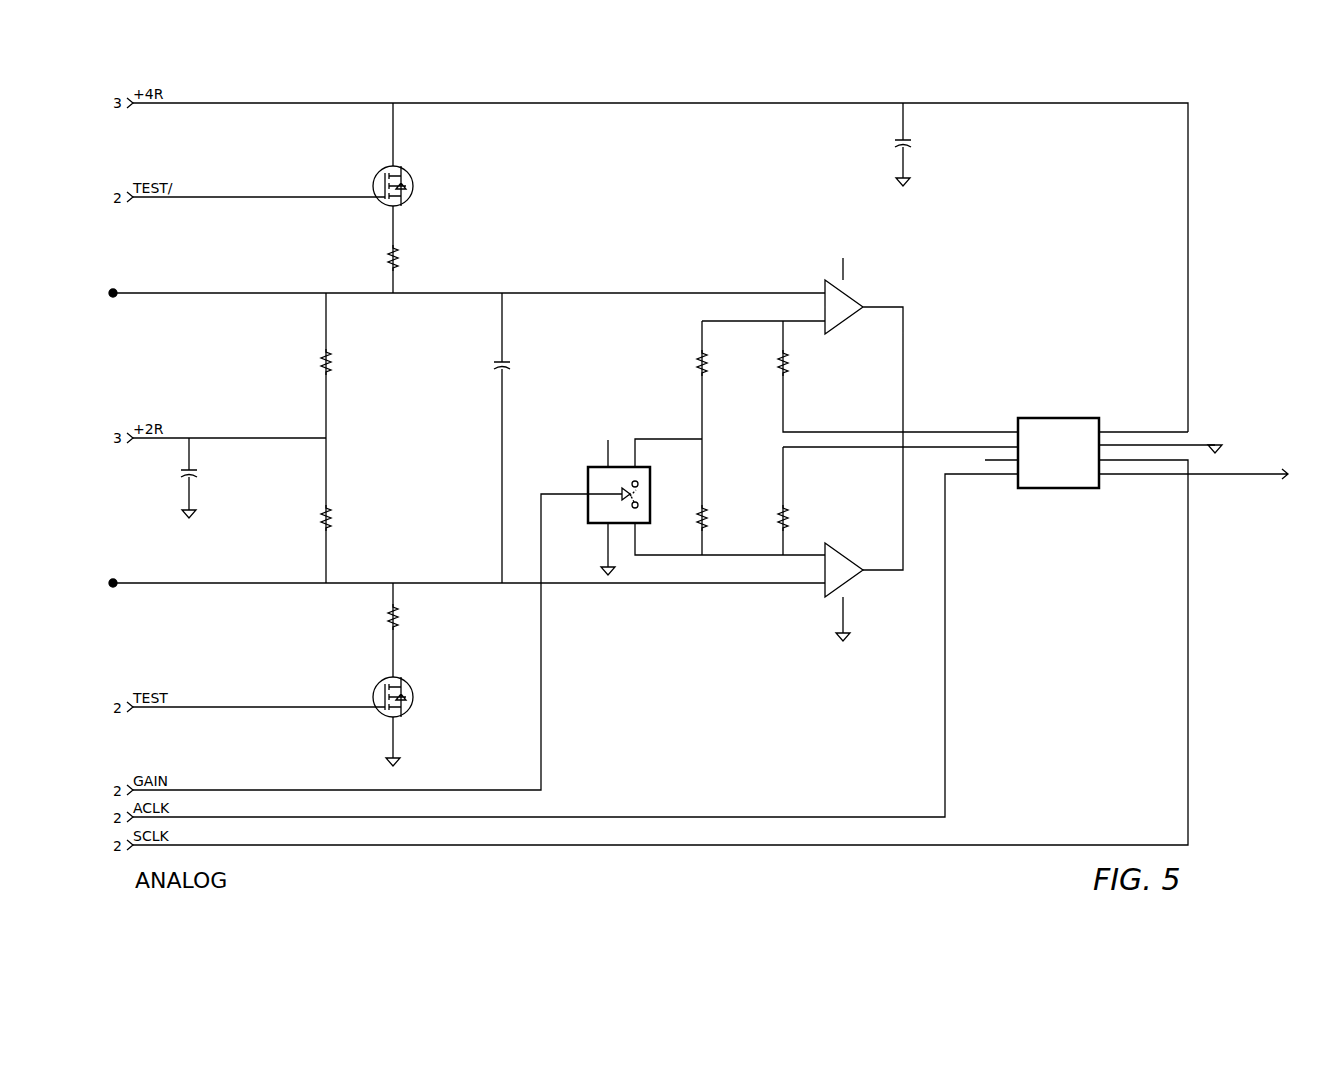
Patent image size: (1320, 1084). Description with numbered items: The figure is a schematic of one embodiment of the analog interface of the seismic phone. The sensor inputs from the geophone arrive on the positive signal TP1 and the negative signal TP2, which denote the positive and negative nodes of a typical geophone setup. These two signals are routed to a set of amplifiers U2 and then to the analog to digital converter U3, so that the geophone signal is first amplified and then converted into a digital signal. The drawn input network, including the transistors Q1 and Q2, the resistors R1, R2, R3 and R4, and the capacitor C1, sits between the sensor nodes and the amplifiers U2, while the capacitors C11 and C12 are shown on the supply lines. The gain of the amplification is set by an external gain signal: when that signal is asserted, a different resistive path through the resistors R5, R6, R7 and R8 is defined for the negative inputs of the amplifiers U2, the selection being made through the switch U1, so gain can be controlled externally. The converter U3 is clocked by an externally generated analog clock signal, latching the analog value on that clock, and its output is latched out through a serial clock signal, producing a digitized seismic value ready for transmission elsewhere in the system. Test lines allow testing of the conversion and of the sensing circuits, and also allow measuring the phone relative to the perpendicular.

The positive sensor input signal TP1 is at (461, 286).
The negative sensor input signal TP2 is at (461, 576).
The MOSFET BSS138 Q1 is at (414, 174).
The MOSFET NDS0605 Q2 is at (420, 716).
The resistor 100K R1 is at (327, 365).
The resistor 100K R2 is at (327, 510).
The resistor 10K R3 is at (389, 267).
The resistor 14K R4 is at (389, 630).
The resistor 1K6 R5 is at (698, 438).
The resistor 24K R6 is at (698, 516).
The resistor 51K R7 is at (879, 376).
The resistor 51K R8 is at (879, 501).
The capacitor 0U22 C1 is at (521, 438).
The capacitor 3U3 C11 is at (204, 482).
The capacitor 3U3 C12 is at (917, 148).
The analog switch ADG702 U1 is at (678, 487).
The dual operational amplifier OPA2350 U2 is at (869, 432).
The analog-to-digital converter ADS1252 U3 is at (1131, 436).